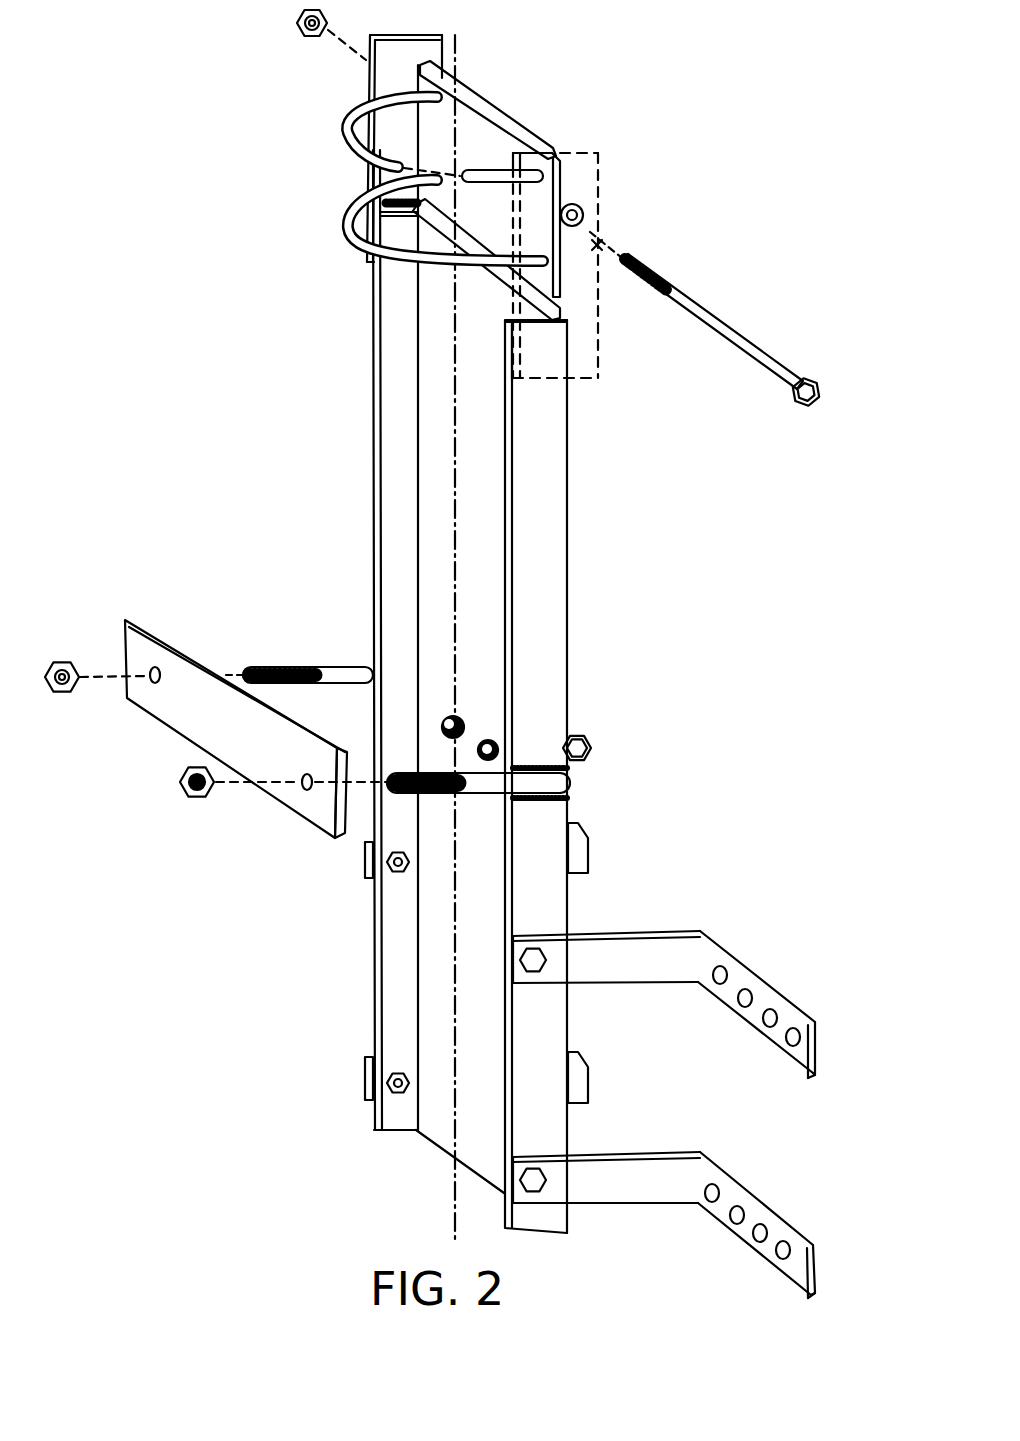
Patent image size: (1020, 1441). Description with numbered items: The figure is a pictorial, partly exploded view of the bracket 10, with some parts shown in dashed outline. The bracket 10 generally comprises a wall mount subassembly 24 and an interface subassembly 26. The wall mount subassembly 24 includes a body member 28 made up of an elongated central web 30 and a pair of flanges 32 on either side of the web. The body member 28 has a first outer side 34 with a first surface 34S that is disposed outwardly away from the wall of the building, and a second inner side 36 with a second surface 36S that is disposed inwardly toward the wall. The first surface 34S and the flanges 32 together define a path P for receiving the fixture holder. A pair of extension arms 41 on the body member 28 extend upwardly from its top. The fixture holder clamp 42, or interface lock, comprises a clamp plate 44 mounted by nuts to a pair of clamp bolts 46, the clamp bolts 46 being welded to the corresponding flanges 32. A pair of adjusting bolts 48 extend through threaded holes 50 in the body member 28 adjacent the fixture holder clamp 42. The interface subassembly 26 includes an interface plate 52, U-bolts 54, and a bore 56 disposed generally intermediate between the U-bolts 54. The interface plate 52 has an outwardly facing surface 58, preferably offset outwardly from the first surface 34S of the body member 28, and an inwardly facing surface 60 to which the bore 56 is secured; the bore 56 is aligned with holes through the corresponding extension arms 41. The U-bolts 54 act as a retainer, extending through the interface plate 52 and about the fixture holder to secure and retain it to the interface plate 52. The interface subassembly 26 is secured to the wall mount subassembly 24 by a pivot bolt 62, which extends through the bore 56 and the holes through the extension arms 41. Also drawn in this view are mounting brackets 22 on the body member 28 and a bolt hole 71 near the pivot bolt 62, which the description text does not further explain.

The bracket 10 is at (210, 117).
The mounting brackets 22 is at (622, 933).
The wall mount subassembly 24 is at (575, 648).
The interface subassembly 26 is at (576, 185).
The body member 28 is at (447, 968).
The central web 30 is at (492, 558).
The flanges 32 is at (400, 478).
The first outer side 34 is at (467, 337).
The first surface 34S is at (437, 412).
The second inner side 36 is at (520, 318).
The second surface 36S is at (565, 298).
The extension arms 41 is at (402, 50).
The fixture holder clamp 42 is at (274, 809).
The clamp plate 44 is at (175, 705).
The clamp bolts 46 is at (332, 668).
The adjusting bolts 48 is at (447, 727).
The threaded holes 50 is at (460, 733).
The interface plate 52 is at (469, 128).
The U-bolts 54 is at (355, 140).
The bore 56 is at (584, 216).
The outwardly facing surface 58 is at (493, 157).
The inwardly facing surface 60 is at (578, 172).
The pivot bolt 62 is at (720, 322).
The bolt hole 71 is at (617, 246).
The path P is at (450, 1057).